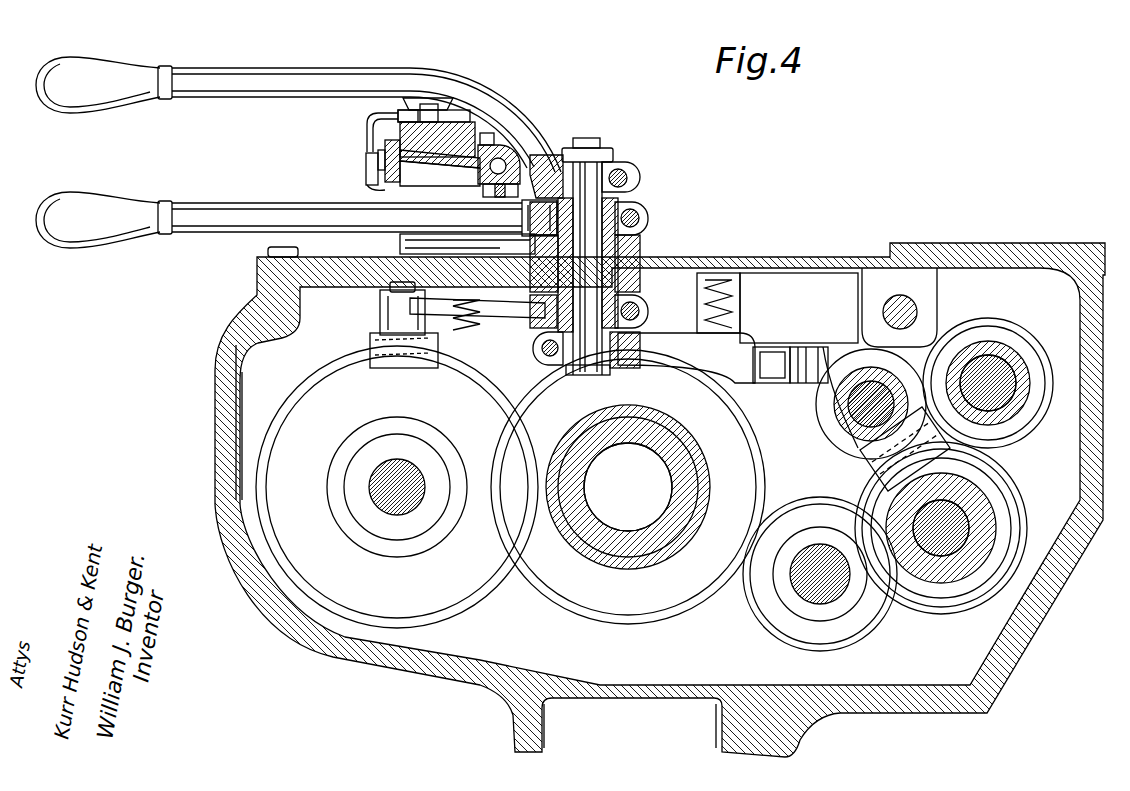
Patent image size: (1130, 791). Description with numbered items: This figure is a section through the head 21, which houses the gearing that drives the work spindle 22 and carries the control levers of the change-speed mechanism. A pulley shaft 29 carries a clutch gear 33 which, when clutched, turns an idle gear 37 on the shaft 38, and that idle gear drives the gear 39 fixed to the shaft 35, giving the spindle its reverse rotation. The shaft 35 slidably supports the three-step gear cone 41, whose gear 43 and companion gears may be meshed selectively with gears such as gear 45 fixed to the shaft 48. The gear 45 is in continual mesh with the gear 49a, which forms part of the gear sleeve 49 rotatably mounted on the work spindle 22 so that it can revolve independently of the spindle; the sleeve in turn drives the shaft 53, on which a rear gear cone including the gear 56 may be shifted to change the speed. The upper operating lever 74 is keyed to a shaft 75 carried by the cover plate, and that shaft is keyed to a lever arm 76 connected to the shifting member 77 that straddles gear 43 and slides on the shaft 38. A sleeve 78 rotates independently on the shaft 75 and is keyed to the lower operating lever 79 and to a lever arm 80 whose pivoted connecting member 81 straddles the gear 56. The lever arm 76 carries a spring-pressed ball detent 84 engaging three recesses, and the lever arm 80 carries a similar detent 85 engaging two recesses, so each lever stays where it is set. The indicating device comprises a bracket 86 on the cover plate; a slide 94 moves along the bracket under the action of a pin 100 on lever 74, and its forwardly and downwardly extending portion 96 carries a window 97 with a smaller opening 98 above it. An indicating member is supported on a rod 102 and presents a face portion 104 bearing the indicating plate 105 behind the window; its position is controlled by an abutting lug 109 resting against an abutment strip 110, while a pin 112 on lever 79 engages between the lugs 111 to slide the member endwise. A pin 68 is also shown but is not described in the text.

The head 21 is at (358, 665).
The operating lever 74 is at (300, 70).
The operating lever 79 is at (262, 205).
The shaft 75 is at (603, 175).
The sleeve 78 is at (633, 216).
The slide 94 is at (455, 110).
The abutment strip 110 is at (488, 128).
The abutting lug 109 is at (515, 140).
The rod 102 is at (517, 142).
The pin 100 is at (398, 113).
The forwardly and downwardly extending portion 96 is at (367, 128).
The opening 98 is at (385, 150).
The indicating plate 105 is at (378, 158).
The window 97 is at (366, 172).
The face portion 104 is at (372, 187).
The lugs 111 is at (455, 180).
The pin 112 is at (487, 192).
The bracket 86 is at (400, 244).
The spring-pressed ball detent 85 is at (480, 306).
The lever arm 80 is at (500, 320).
The pivoted connecting member 81 is at (370, 340).
The gear 56 is at (315, 402).
The shaft 53 is at (375, 505).
The gear 49a is at (690, 605).
The gear sleeve 49 is at (662, 555).
The work spindle 22 is at (598, 471).
The lever arm 76 is at (655, 340).
The spring-pressed ball detent 84 is at (742, 300).
The pivot pin 68 is at (885, 310).
The shifting member 77 is at (830, 347).
The idle gear 37 is at (826, 410).
The shaft 38 is at (850, 440).
The gear 33 is at (965, 335).
The pulley shaft 29 is at (1020, 410).
The gear 39 is at (1002, 478).
The gear 43 is at (1010, 500).
The three-step gear cone 41 is at (1003, 525).
The shaft 35 is at (975, 568).
The gear 45 is at (785, 630).
The shaft 48 is at (835, 598).